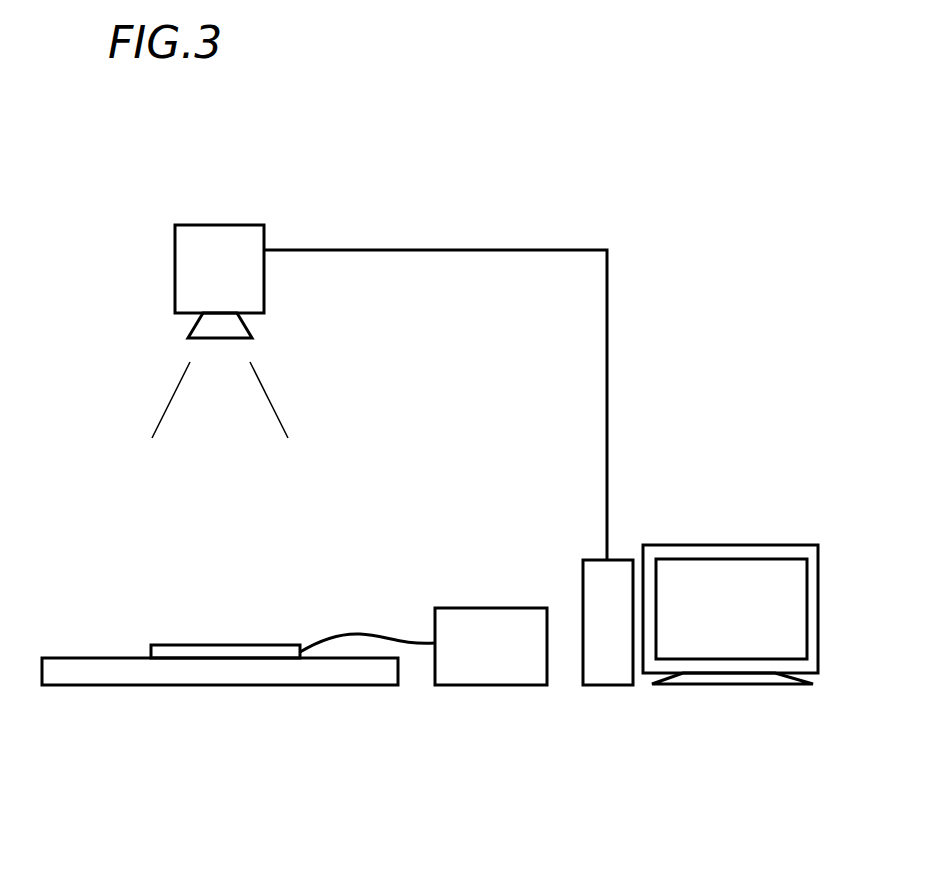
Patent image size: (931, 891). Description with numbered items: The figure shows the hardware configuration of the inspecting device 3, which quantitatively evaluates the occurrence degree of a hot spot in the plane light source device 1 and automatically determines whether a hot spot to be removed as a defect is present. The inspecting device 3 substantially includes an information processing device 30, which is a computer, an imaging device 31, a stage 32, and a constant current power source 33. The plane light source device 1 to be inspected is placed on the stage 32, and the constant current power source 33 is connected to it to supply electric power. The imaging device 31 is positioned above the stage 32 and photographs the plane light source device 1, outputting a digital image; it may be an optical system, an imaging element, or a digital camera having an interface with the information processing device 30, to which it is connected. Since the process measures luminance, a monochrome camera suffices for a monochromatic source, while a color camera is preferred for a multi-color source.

The inspecting device 3 is at (723, 180).
The imaging device 31 is at (213, 240).
The plane light source device 1 is at (183, 652).
The stage 32 is at (298, 677).
The constant current power source 33 is at (493, 677).
The information processing device 30 is at (610, 677).